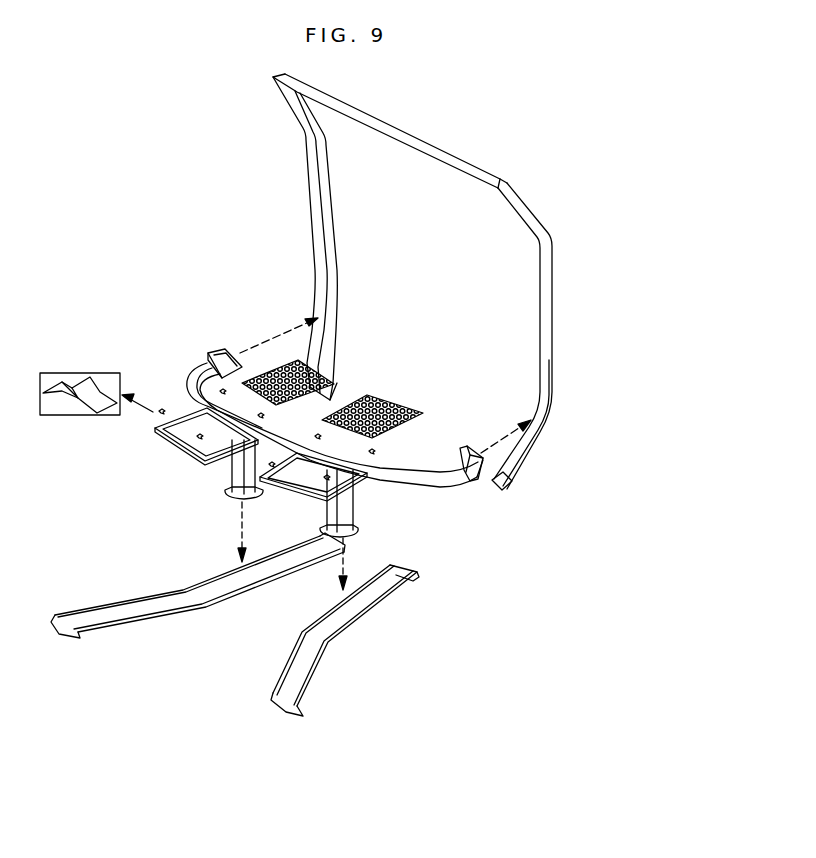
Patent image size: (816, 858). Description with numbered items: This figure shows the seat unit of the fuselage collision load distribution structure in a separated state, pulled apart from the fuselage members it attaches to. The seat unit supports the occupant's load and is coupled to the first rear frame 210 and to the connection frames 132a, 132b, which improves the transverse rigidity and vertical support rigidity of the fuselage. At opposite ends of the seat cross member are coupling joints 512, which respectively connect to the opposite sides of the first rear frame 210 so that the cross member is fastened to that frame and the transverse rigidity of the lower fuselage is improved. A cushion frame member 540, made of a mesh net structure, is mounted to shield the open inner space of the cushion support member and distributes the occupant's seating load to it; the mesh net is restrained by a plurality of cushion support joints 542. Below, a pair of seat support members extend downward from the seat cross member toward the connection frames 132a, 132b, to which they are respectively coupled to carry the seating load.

The first rear frame 210 is at (553, 322).
The coupling joints 512 is at (230, 340).
The cushion frame member 540 is at (358, 393).
The cushion support joints 542 is at (203, 367).
The connection frame 132a is at (370, 608).
The connection frame 132b is at (140, 600).